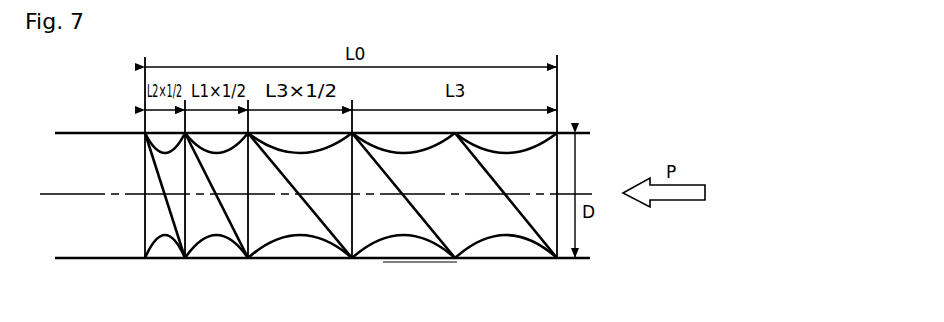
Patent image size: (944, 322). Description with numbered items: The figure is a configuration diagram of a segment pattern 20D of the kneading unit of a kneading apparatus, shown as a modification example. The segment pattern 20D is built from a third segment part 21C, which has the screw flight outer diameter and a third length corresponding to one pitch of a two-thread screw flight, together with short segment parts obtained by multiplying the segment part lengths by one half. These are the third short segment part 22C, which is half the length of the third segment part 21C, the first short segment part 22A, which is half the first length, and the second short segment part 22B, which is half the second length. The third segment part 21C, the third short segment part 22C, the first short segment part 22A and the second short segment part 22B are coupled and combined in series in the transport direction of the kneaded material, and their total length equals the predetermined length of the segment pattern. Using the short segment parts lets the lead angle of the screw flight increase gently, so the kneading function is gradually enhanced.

The segment pattern 20D is at (602, 127).
The second short segment part 22B is at (162, 242).
The first short segment part 22A is at (220, 240).
The third short segment part 22C is at (328, 237).
The third segment part 21C is at (478, 240).